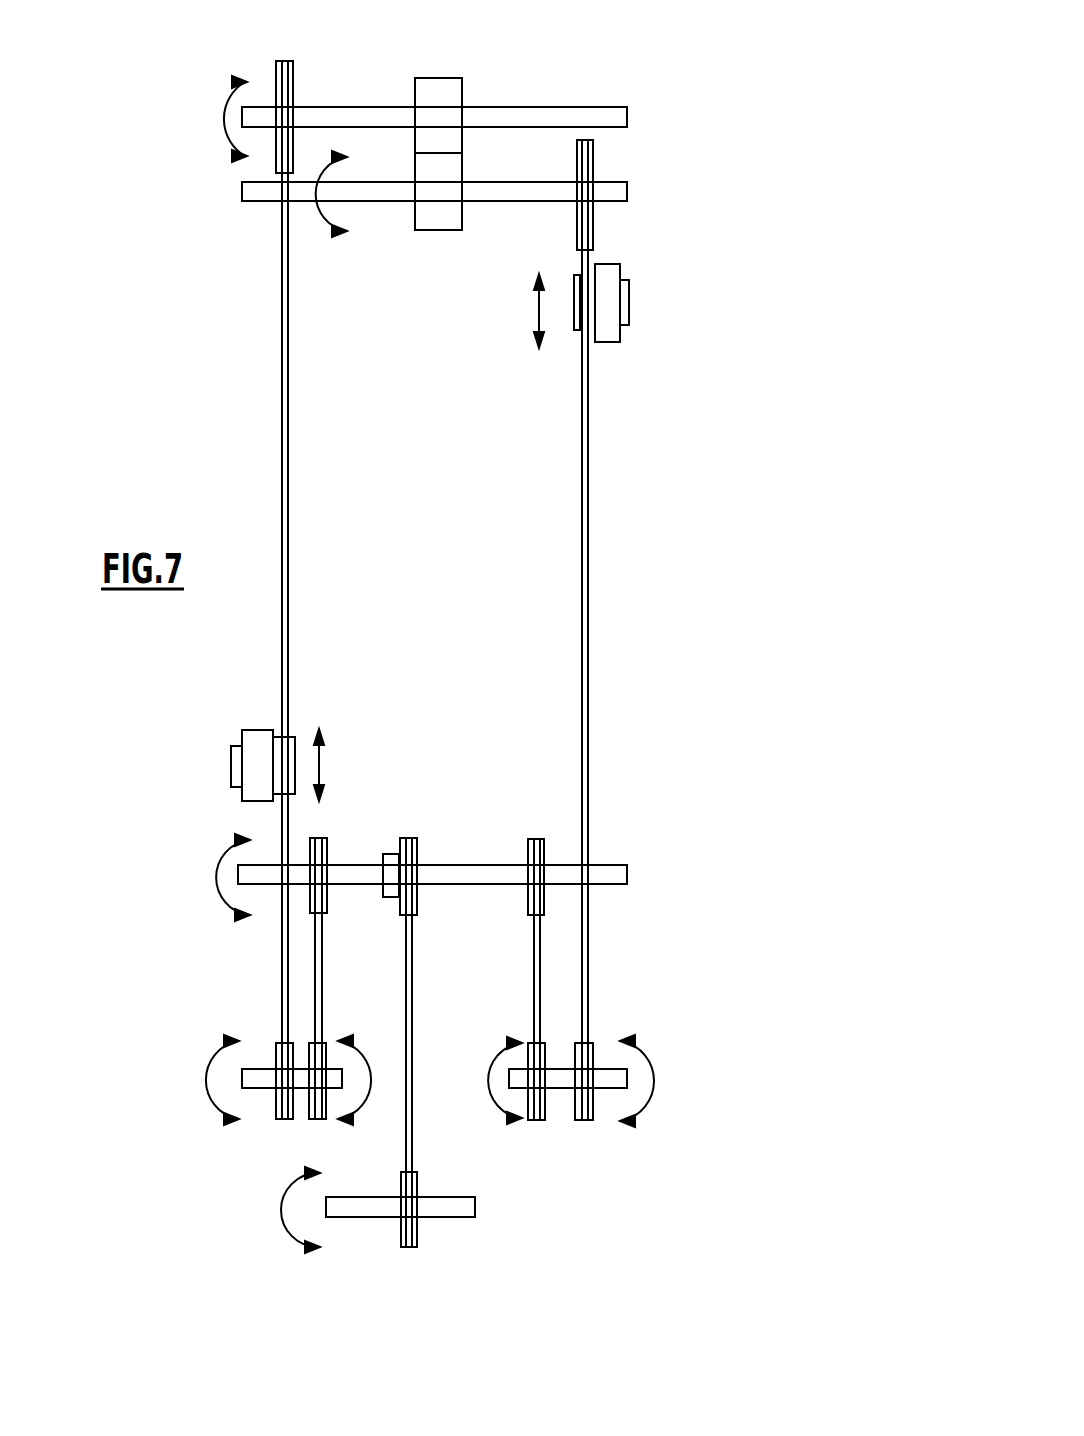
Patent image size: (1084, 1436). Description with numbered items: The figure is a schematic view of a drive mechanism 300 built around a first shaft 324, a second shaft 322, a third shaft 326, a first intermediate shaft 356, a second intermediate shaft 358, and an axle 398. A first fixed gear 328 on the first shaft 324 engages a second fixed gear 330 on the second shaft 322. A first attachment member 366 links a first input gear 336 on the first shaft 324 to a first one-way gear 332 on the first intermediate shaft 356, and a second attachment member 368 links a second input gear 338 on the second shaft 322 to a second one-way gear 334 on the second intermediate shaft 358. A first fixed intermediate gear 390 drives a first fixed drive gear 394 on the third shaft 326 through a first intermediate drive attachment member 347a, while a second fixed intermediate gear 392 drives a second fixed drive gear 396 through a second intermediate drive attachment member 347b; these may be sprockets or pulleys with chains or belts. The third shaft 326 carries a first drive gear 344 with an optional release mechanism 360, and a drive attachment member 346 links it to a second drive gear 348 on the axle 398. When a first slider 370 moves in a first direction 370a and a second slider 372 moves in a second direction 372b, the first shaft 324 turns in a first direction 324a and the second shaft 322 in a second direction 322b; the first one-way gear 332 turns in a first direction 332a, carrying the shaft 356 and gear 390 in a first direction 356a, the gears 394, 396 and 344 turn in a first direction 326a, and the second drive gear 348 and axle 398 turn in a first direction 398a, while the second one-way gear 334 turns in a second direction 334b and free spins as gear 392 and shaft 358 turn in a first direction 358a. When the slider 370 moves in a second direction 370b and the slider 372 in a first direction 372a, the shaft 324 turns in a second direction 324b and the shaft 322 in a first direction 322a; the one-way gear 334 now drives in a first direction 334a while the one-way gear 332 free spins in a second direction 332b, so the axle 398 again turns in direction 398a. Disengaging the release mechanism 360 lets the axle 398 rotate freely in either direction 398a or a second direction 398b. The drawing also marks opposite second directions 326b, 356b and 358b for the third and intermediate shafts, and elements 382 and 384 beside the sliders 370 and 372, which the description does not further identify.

The drive mechanism 300 is at (726, 42).
The second shaft 322 is at (541, 107).
The first direction of second shaft 322a is at (207, 109).
The second direction of second shaft 322b is at (208, 176).
The first shaft 324 is at (629, 191).
The first direction of first shaft 324a is at (361, 191).
The second direction of first shaft 324b is at (380, 231).
The third shaft 326 is at (628, 871).
The first direction of third shaft 326a is at (200, 872).
The second rotation direction of shaft 326 326b is at (181, 911).
The first fixed gear 328 is at (438, 231).
The second fixed gear 330 is at (460, 78).
The first one-way gear 332 is at (585, 1122).
The first direction of first one-way gear 332a is at (631, 1067).
The second direction of first one-way gear 332b is at (641, 1139).
The second one-way gear 334 is at (280, 1120).
The first direction of second one-way gear 334a is at (202, 1066).
The second direction of second one-way gear 334b is at (208, 1141).
The first input gear 336 is at (595, 162).
The second input gear 338 is at (296, 61).
The first drive gear 344 is at (418, 845).
The drive attachment member 346 is at (415, 949).
The first intermediate drive attachment member 347a is at (545, 931).
The second intermediate drive attachment member 347b is at (314, 942).
The second drive gear 348 is at (407, 1248).
The first intermediate shaft 356 is at (558, 1089).
The first direction of first intermediate shaft 356a is at (486, 1066).
The second rotation direction of shaft 356 356b is at (493, 1141).
The second intermediate shaft 358 is at (290, 1042).
The first direction of second intermediate shaft 358a is at (369, 1066).
The second rotation direction of pulley 358 358b is at (371, 1139).
The release mechanism 360 is at (396, 897).
The first attachment member 366 is at (590, 543).
The second attachment member 368 is at (282, 462).
The first slider 370 is at (620, 268).
The first direction of first slider 370a is at (540, 296).
The second direction of first slider 370b is at (540, 366).
The second slider 372 is at (245, 730).
The first direction of second slider 372a is at (321, 750).
The second direction of second slider 372b is at (323, 819).
The tensioner roller 382 is at (630, 305).
The tensioner roller 384 is at (231, 768).
The first fixed intermediate gear 390 is at (530, 1043).
The second fixed intermediate gear 392 is at (325, 1043).
The first fixed drive gear 394 is at (536, 839).
The second fixed drive gear 396 is at (329, 840).
The axle 398 is at (418, 1223).
The first direction of axle 398a is at (329, 1206).
The second direction of axle 398b is at (352, 1244).